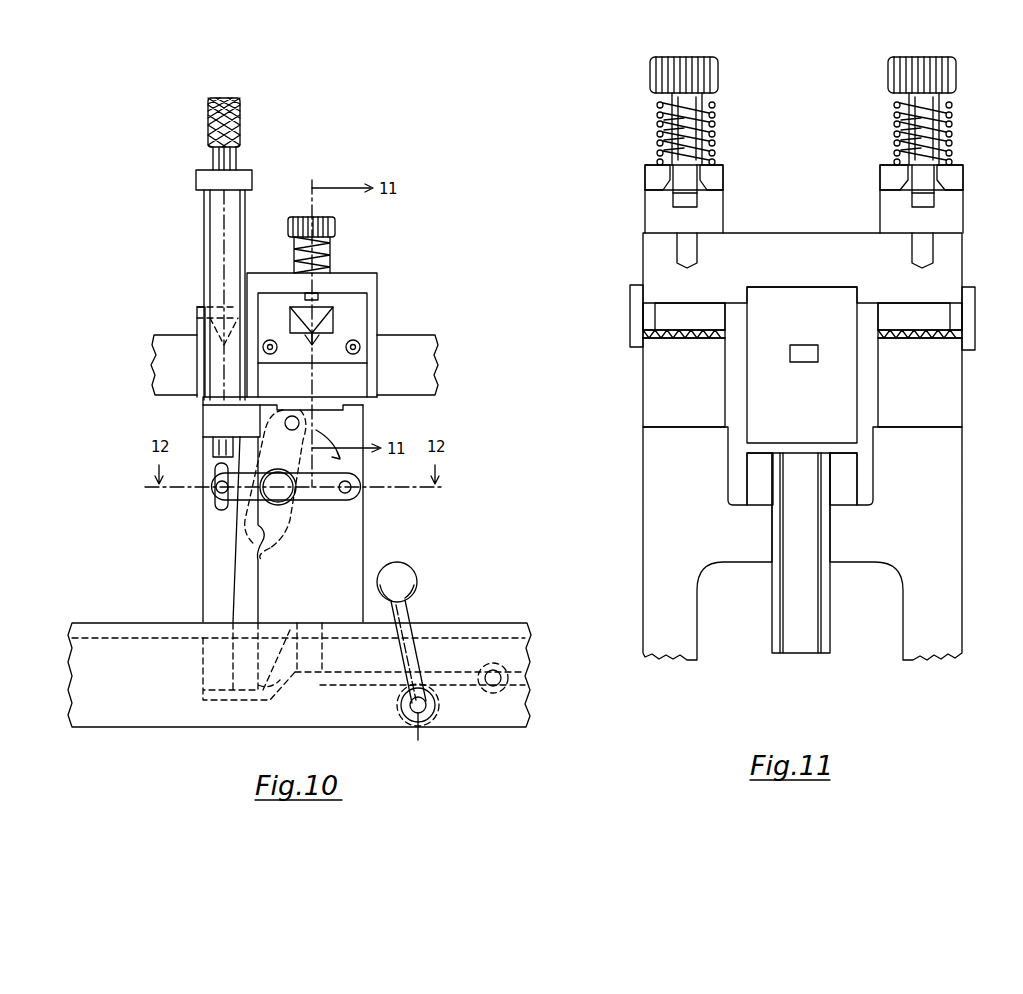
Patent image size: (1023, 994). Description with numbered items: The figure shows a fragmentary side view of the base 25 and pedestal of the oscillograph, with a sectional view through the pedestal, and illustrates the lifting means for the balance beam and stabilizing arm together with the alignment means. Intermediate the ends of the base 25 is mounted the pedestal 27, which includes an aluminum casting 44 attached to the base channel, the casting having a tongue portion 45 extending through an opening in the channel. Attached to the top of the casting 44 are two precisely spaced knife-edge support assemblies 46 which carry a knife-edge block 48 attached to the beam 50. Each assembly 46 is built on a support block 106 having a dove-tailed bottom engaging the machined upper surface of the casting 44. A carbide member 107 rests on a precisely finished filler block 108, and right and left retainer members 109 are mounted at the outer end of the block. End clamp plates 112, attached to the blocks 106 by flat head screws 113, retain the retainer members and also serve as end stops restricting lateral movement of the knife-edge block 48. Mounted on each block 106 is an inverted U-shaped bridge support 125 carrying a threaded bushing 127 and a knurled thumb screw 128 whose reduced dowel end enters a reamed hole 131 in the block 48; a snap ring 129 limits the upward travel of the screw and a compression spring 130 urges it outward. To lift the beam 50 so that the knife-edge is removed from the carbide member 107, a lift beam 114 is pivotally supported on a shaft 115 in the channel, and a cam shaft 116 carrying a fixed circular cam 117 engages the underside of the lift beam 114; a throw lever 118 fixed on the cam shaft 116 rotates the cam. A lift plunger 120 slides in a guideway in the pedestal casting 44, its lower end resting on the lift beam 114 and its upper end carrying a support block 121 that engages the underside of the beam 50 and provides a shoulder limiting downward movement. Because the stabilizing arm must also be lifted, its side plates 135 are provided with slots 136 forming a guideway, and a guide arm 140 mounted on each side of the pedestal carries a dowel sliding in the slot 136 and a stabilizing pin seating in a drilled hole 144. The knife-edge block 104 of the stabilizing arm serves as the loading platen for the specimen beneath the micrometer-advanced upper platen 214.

In FIG. 10, the base plate 25 is at (546, 716).
In FIG. 10, the pedestal 27 is at (432, 523).
In FIG. 11, the pedestal 27 is at (978, 500).
In FIG. 10, the pedestal casting 44 is at (360, 557).
In FIG. 11, the pedestal casting 44 is at (962, 576).
In FIG. 10, the tongue portion 45 is at (257, 666).
In FIG. 10, the knife-edge support assembly 46 is at (434, 322).
In FIG. 10, the knife-edge block 48 is at (330, 320).
In FIG. 11, the knife-edge block 48 is at (815, 233).
In FIG. 10, the beam 50 is at (431, 389).
In FIG. 11, the beam 50 is at (817, 363).
In FIG. 10, the knife-edge block 104 is at (197, 310).
In FIG. 10, the support block 106 is at (355, 393).
In FIG. 11, the support block 106 is at (643, 368).
In FIG. 11, the carbide member 107 is at (655, 300).
In FIG. 11, the filler block 108 is at (655, 332).
In FIG. 11, the right retainer member 109 is at (655, 316).
In FIG. 10, the end clamp plate 112 is at (362, 357).
In FIG. 11, the end clamp plate 112 is at (632, 287).
In FIG. 10, the flat head screw 113 is at (358, 344).
In FIG. 10, the lift beam 114 is at (452, 684).
In FIG. 10, the shaft 115 is at (501, 678).
In FIG. 10, the cam shaft 116 is at (418, 740).
In FIG. 10, the circular cam 117 is at (403, 722).
In FIG. 10, the throw lever 118 is at (408, 616).
In FIG. 10, the lift plunger 120 is at (324, 658).
In FIG. 11, the lift plunger 120 is at (830, 623).
In FIG. 11, the support block 121 is at (755, 505).
In FIG. 10, the bridge support 125 is at (360, 283).
In FIG. 11, the bridge support 125 is at (723, 170).
In FIG. 11, the threaded bushing 127 is at (665, 190).
In FIG. 11, the thumb screw 128 is at (718, 65).
In FIG. 11, the snap ring 129 is at (700, 200).
In FIG. 11, the compression spring 130 is at (716, 105).
In FIG. 11, the reamed hole 131 is at (677, 228).
In FIG. 10, the side plate 135 is at (203, 550).
In FIG. 10, the slot 136 is at (220, 510).
In FIG. 10, the guide arm 140 is at (322, 495).
In FIG. 10, the drilled hole 144 is at (299, 423).
In FIG. 10, the upper platen 214 is at (250, 170).